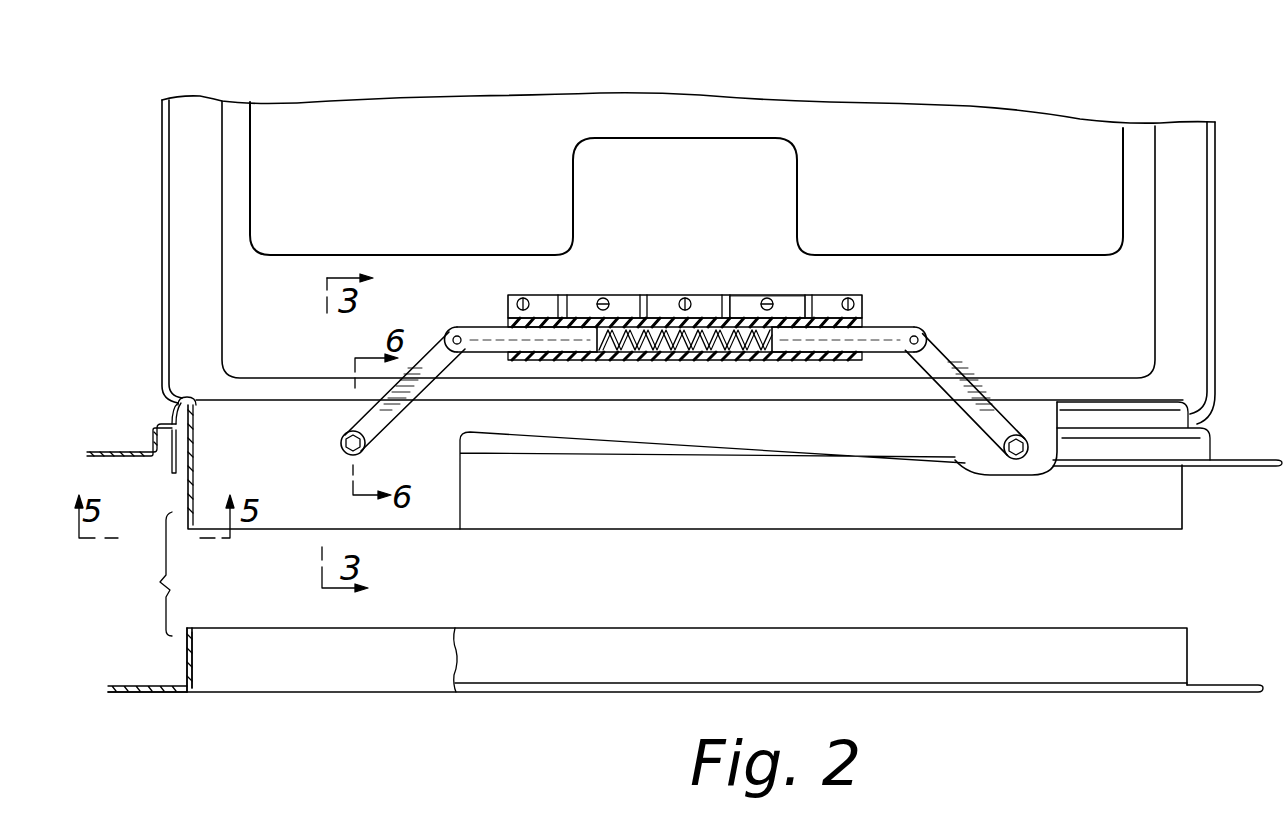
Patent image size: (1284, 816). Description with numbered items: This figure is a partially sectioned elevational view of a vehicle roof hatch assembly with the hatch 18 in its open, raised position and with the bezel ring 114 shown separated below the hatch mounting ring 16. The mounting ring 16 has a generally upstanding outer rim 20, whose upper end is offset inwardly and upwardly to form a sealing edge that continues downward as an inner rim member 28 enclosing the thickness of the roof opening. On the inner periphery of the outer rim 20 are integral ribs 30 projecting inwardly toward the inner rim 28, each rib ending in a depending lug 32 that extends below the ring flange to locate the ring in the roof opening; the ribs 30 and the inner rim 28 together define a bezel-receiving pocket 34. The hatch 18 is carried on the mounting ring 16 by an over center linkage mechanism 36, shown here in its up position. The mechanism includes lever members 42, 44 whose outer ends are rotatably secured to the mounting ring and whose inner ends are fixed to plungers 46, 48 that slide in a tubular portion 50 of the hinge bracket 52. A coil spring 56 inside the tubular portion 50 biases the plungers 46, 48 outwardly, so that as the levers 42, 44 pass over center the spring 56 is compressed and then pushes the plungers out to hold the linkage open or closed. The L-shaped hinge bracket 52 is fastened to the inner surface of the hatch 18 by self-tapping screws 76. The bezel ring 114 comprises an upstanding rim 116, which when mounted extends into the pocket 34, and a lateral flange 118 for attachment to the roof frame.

The hatch 18 is at (1220, 215).
The hatch mounting ring 16 is at (1215, 435).
The outer rim 20 is at (156, 440).
The ribs 30 is at (172, 420).
The bezel-receiving pocket 34 is at (192, 440).
The lug 32 is at (178, 468).
The inner rim member 28 is at (190, 492).
The over center linkage mechanism 36 is at (968, 355).
The lever member 42 is at (374, 424).
The lever member 44 is at (986, 430).
The plunger 46 is at (488, 332).
The plunger 48 is at (896, 334).
The tubular portion 50 is at (654, 323).
The hinge bracket 52 is at (790, 292).
The coil spring 56 is at (708, 355).
The self-tapping screws 76 is at (603, 298).
The bezel ring 114 is at (338, 690).
The upstanding rim 116 is at (186, 656).
The lateral flange 118 is at (166, 694).